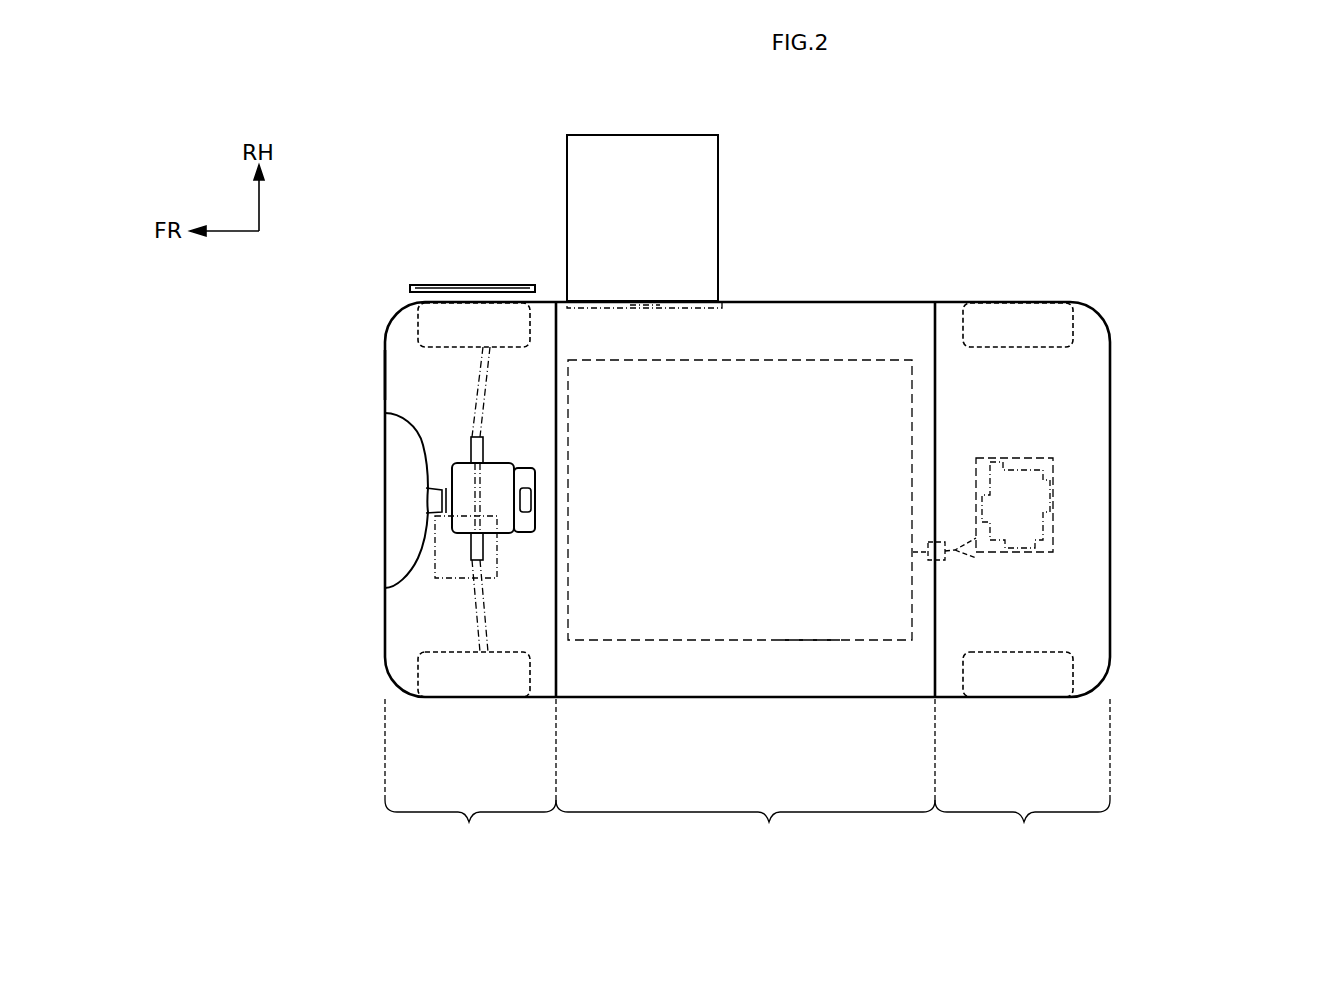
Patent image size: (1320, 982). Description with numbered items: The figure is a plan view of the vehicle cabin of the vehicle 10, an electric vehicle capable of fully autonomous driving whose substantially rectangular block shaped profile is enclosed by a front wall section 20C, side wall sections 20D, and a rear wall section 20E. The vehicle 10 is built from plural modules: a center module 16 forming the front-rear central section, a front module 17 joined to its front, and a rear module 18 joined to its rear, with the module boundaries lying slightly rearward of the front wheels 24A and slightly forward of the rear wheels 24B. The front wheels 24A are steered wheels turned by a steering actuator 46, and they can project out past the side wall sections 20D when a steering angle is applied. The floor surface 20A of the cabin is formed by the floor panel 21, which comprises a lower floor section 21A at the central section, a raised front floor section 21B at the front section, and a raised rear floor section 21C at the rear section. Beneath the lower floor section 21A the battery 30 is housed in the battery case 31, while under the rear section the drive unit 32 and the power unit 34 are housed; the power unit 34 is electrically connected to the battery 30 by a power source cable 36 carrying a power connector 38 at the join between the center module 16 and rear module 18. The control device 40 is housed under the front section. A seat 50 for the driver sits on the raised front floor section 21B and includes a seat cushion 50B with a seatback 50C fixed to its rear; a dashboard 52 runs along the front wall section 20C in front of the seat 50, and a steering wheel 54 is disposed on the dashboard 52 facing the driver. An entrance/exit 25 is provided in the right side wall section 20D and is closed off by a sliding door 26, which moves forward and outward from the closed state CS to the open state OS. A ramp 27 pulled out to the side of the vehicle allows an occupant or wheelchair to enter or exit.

The vehicle 10 is at (1126, 299).
The center module 16 is at (745, 826).
The front module 17 is at (470, 826).
The rear module 18 is at (1022, 826).
The floor surface 20A is at (645, 673).
The front wall section 20C is at (384, 623).
The side wall section 20D is at (853, 301).
The rear wall section 20E is at (1111, 398).
The floor panel 21 is at (720, 672).
The lower floor section 21A is at (600, 673).
The raised front floor section 21B is at (397, 370).
The raised rear floor section 21C is at (1073, 378).
The front wheels 24A is at (463, 680).
The rear wheels 24B is at (1020, 683).
The entrance/exit 25 is at (615, 302).
The sliding door 26 is at (490, 285).
The ramp 27 is at (705, 160).
The battery 30 is at (853, 597).
The battery case 31 is at (809, 641).
The drive unit 32 is at (1020, 496).
The power unit 34 is at (1050, 462).
The power source cable 36 is at (958, 556).
The power connector 38 is at (933, 545).
The control device 40 is at (446, 558).
The steering actuator 46 is at (487, 493).
The seat 50 is at (500, 464).
The seat cushion 50B is at (505, 526).
The seatback 50C is at (530, 520).
The dashboard 52 is at (397, 466).
The steering wheel 54 is at (445, 480).
The open state OS is at (455, 285).
The closed state CS is at (643, 309).